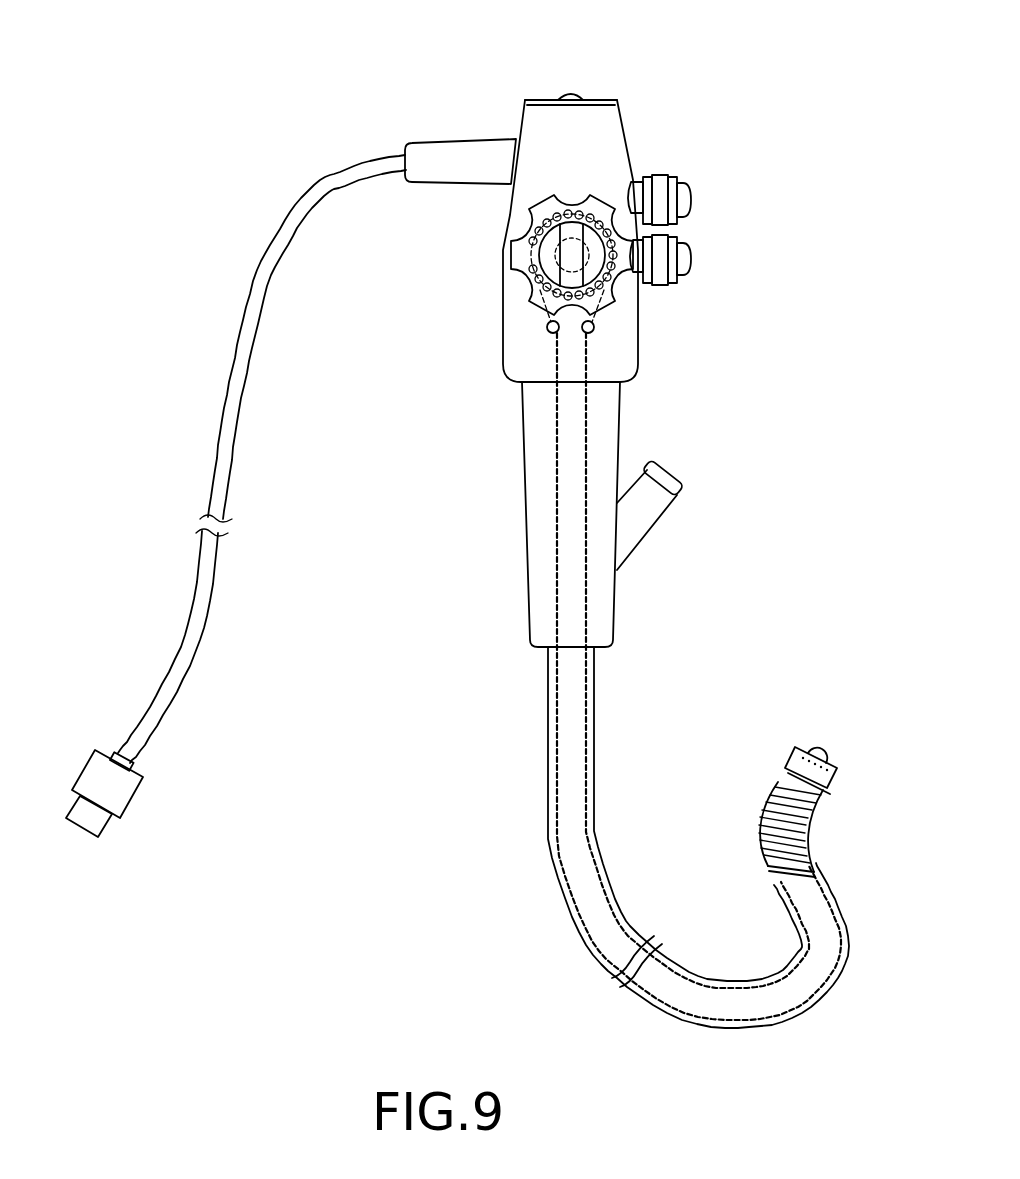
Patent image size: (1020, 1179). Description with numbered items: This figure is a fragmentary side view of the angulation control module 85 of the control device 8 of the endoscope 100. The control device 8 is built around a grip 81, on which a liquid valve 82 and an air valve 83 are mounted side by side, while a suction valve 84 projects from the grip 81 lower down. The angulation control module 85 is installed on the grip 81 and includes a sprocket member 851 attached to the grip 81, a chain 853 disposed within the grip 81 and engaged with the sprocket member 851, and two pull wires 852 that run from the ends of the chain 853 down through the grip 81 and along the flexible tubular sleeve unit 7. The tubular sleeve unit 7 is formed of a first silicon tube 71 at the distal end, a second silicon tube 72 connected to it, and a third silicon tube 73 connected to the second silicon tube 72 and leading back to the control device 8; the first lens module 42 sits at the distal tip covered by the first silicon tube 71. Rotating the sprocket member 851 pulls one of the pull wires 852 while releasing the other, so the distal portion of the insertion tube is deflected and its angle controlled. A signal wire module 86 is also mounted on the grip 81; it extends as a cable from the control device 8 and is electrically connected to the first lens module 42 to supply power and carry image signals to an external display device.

The tubular sleeve unit 7 is at (652, 680).
The control device 8 is at (623, 94).
The first lens module 42 is at (823, 750).
The first silicon tube 71 is at (790, 760).
The second silicon tube 72 is at (770, 820).
The third silicon tube 73 is at (565, 912).
The grip 81 is at (537, 118).
The liquid valve 82 is at (690, 197).
The air valve 83 is at (690, 258).
The suction valve 84 is at (676, 484).
The angulation control module 85 is at (555, 219).
The sprocket member 851 is at (535, 208).
The pull wires 852 is at (559, 733).
The chain 853 is at (600, 208).
The signal wire module 86 is at (225, 415).
The endoscope 100 is at (450, 132).